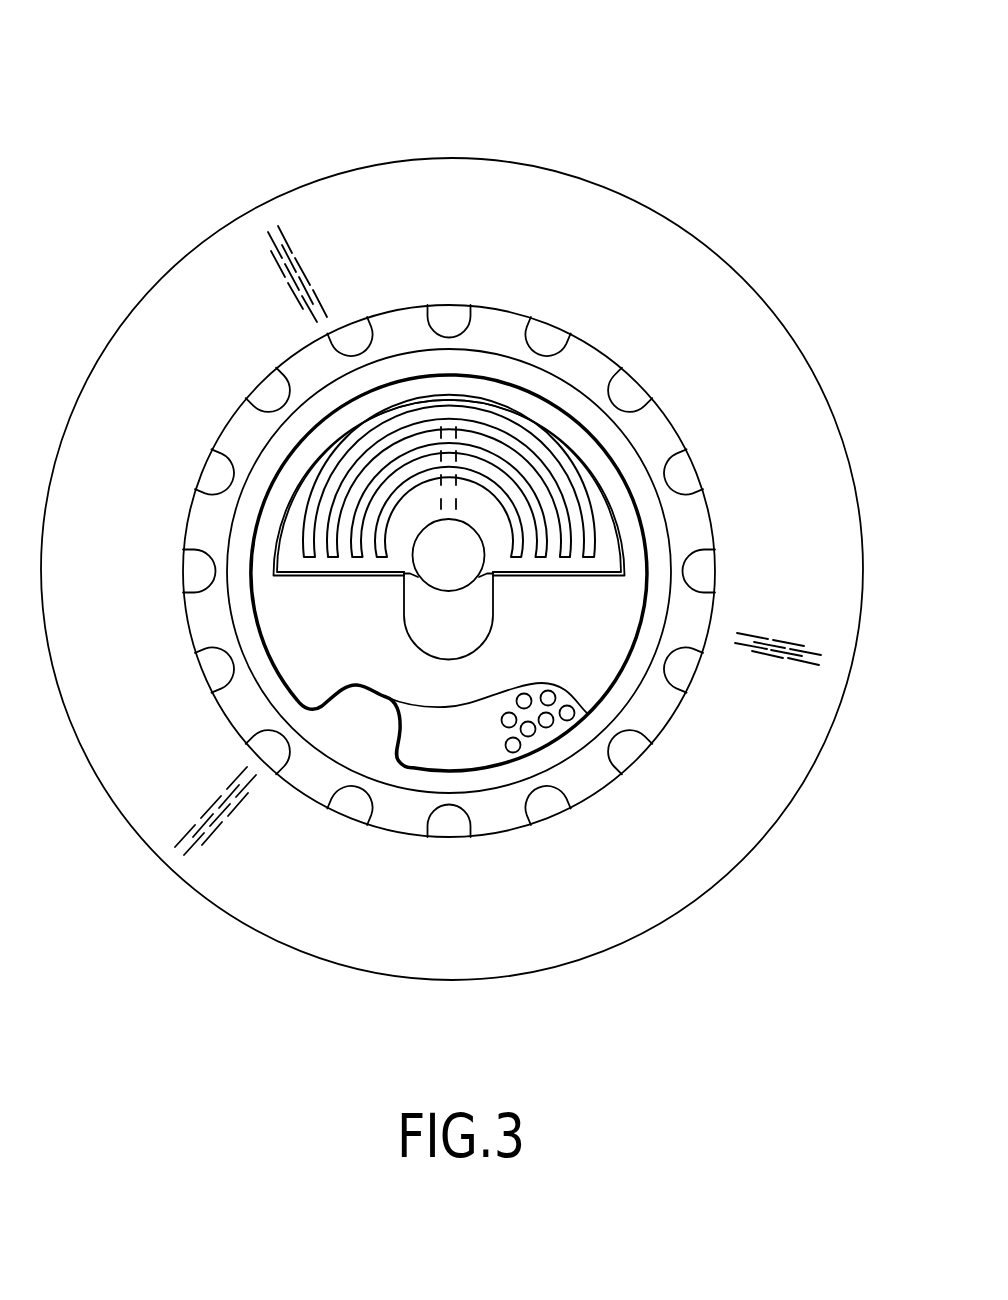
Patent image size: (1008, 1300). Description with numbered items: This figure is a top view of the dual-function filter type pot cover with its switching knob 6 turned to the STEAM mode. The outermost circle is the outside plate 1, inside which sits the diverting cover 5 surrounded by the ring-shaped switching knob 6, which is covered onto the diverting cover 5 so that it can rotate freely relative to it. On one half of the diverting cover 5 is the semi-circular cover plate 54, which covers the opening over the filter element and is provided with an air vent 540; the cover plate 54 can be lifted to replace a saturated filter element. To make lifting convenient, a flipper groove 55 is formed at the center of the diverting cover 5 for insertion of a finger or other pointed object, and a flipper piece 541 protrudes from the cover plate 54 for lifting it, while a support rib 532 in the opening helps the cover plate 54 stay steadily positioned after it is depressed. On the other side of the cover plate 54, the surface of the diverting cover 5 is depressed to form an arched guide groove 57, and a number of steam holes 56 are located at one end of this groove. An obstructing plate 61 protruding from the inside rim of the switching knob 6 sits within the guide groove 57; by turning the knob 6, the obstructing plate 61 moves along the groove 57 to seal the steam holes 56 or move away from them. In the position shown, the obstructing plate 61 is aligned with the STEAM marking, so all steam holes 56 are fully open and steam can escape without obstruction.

The outside plate 1 is at (718, 851).
The diverting cover 5 is at (602, 658).
The switching knob 6 is at (598, 365).
The semi-circular cover plate 54 is at (480, 390).
The support rib 532 is at (449, 430).
The air vent 540 is at (380, 447).
The flipper piece 541 is at (446, 574).
The flipper groove 55 is at (421, 627).
The steam holes 56 is at (549, 722).
The arched guide groove 57 is at (463, 735).
The obstructing plate 61 is at (378, 695).